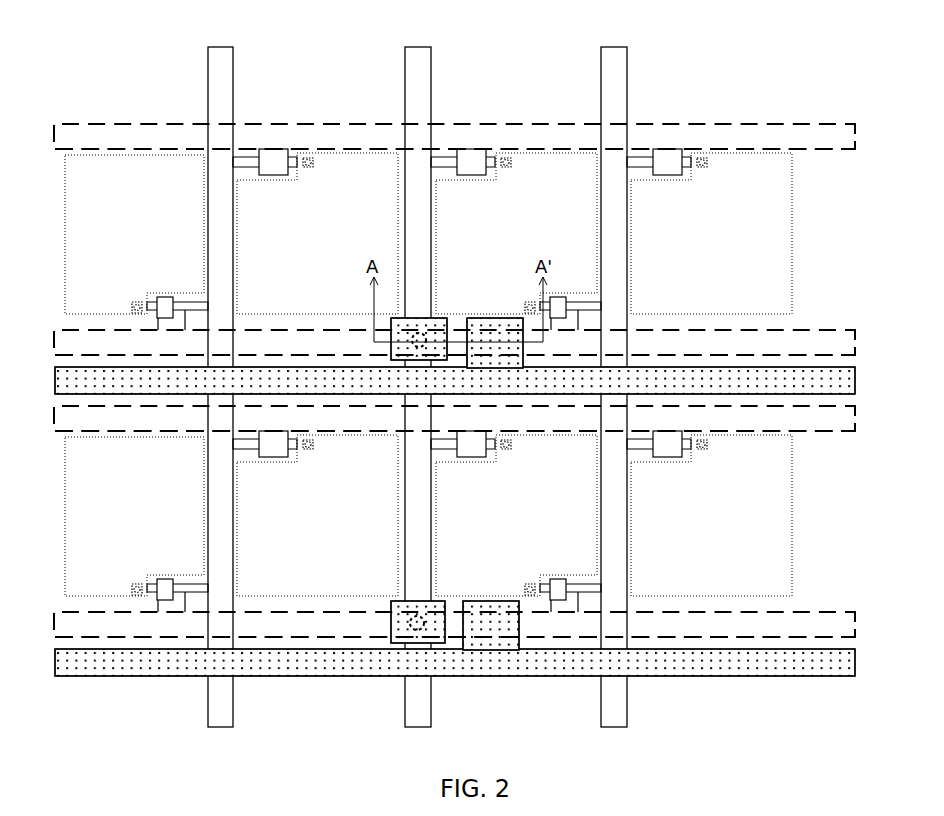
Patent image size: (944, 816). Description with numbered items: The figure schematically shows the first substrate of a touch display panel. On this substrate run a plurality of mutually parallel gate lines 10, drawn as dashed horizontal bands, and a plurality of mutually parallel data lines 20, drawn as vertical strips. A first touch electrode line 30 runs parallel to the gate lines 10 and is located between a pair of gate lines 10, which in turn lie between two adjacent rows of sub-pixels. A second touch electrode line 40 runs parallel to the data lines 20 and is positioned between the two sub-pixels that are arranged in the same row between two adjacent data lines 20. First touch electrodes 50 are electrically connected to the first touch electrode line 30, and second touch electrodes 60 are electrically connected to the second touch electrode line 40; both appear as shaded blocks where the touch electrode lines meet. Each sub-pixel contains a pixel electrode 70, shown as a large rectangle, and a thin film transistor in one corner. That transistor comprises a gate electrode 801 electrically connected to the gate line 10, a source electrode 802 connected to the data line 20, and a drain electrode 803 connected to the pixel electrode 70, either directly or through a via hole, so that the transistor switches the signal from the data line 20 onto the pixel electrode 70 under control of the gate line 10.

The gate line 10 is at (847, 123).
The data line 20 is at (224, 50).
The first touch electrode line 30 is at (851, 386).
The second touch electrode line 40 is at (420, 50).
The first touch electrode 50 is at (470, 118).
The second touch electrode 60 is at (340, 118).
The pixel electrode 70 is at (737, 167).
The gate electrode 801 is at (667, 150).
The source electrode 802 is at (633, 157).
The drain electrode 803 is at (700, 158).